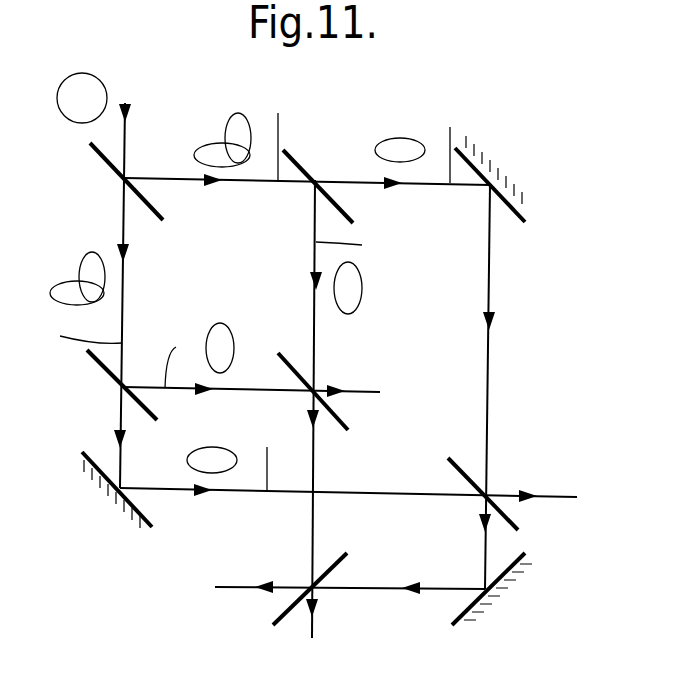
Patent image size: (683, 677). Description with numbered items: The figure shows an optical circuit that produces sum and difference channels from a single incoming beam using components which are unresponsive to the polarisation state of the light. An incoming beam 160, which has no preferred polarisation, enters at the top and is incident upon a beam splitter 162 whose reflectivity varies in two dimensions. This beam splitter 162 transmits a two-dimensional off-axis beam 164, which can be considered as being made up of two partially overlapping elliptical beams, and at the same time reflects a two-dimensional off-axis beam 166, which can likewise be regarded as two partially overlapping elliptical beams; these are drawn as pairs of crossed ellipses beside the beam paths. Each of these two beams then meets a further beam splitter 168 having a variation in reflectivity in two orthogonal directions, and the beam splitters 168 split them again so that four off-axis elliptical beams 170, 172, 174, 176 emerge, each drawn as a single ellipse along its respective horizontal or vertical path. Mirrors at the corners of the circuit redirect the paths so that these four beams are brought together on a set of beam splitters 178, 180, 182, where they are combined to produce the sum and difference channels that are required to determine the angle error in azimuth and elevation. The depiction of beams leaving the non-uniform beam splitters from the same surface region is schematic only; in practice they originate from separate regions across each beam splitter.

The incoming beam 160 is at (126, 103).
The beam splitter 162 is at (110, 170).
The two-dimensional off-axis beam 164 is at (90, 305).
The two-dimensional off-axis beam 166 is at (250, 133).
The beam splitters 168 is at (290, 152).
The off-axis elliptical beam 170 is at (207, 360).
The off-axis elliptical beam 172 is at (237, 463).
The off-axis elliptical beam 174 is at (350, 262).
The off-axis elliptical beam 176 is at (425, 151).
The beam splitter 178 is at (514, 522).
The beam splitter 180 is at (338, 562).
The beam splitter 182 is at (342, 419).